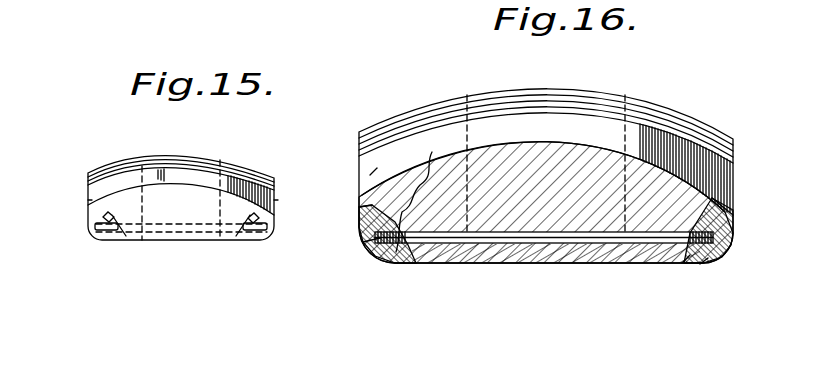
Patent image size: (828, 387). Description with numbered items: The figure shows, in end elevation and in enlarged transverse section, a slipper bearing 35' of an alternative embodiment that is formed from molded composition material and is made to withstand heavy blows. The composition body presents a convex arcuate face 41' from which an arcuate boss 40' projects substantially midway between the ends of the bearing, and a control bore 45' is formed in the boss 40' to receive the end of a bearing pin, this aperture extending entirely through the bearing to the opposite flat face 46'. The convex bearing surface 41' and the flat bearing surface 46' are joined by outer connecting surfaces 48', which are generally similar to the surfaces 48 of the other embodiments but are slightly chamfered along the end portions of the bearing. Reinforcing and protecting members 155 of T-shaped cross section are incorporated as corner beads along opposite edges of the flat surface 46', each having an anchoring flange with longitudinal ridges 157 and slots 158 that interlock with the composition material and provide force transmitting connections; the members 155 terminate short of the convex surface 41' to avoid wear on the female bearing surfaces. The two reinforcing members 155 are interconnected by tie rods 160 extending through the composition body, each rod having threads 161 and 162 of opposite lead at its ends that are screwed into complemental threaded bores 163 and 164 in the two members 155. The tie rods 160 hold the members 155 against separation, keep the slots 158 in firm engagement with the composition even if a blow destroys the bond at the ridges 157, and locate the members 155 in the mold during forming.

In FIG. 16, the slipper bearing 35' is at (546, 164).
In FIG. 16, the arcuate boss 40' is at (546, 104).
In FIG. 16, the arcuate face 41' is at (546, 111).
In FIG. 16, the control bore 45' is at (546, 137).
In FIG. 16, the flat face 46' is at (546, 198).
In FIG. 16, the outer connecting surfaces 48' is at (361, 234).
In FIG. 15, the surfaces 48 is at (165, 210).
In FIG. 16, the surfaces 48 is at (724, 227).
In FIG. 15, the reinforcing and protecting members 155 is at (100, 237).
In FIG. 16, the reinforcing and protecting members 155 is at (696, 262).
In FIG. 16, the ridges 157 is at (366, 242).
In FIG. 15, the slots 158 is at (103, 221).
In FIG. 16, the slots 158 is at (737, 163).
In FIG. 15, the tie rods 160 is at (173, 215).
In FIG. 16, the tie rods 160 is at (533, 239).
In FIG. 16, the threads 161 is at (402, 263).
In FIG. 16, the threads 162 is at (682, 263).
In FIG. 16, the threaded bore 163 is at (375, 255).
In FIG. 16, the threaded bore 164 is at (700, 264).